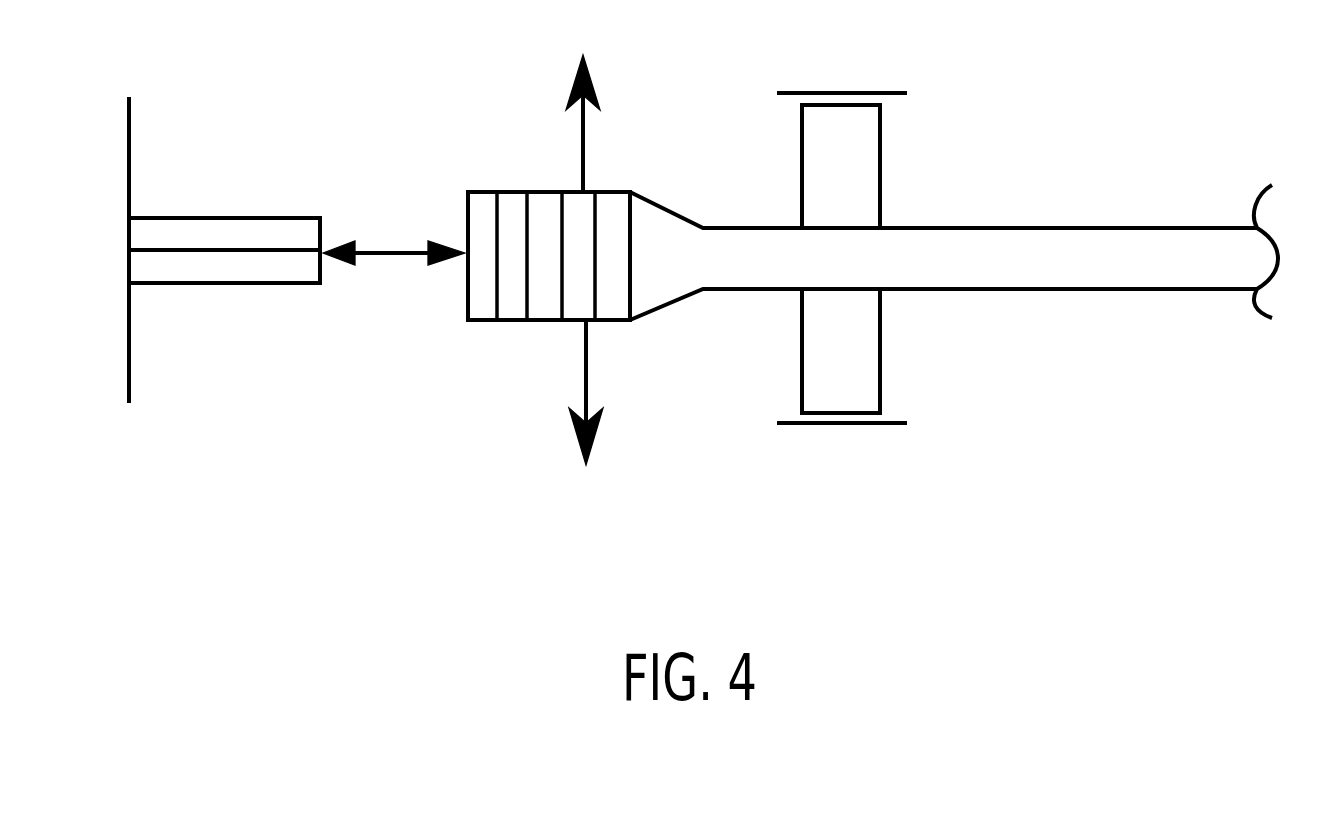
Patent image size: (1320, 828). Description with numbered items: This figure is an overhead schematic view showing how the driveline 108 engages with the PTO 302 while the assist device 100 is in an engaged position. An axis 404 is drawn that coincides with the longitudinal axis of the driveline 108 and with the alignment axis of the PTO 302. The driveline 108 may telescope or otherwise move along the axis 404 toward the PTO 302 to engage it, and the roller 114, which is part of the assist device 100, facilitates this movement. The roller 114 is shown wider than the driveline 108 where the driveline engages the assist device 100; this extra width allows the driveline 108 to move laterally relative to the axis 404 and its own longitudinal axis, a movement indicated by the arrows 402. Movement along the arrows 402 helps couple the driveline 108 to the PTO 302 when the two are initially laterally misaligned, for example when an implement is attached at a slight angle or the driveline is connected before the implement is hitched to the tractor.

The assist device 100 is at (847, 258).
The driveline 108 is at (1168, 240).
The roller 114 is at (838, 397).
The PTO 302 is at (187, 232).
The arrows 402 is at (566, 388).
The axis 404 is at (378, 226).